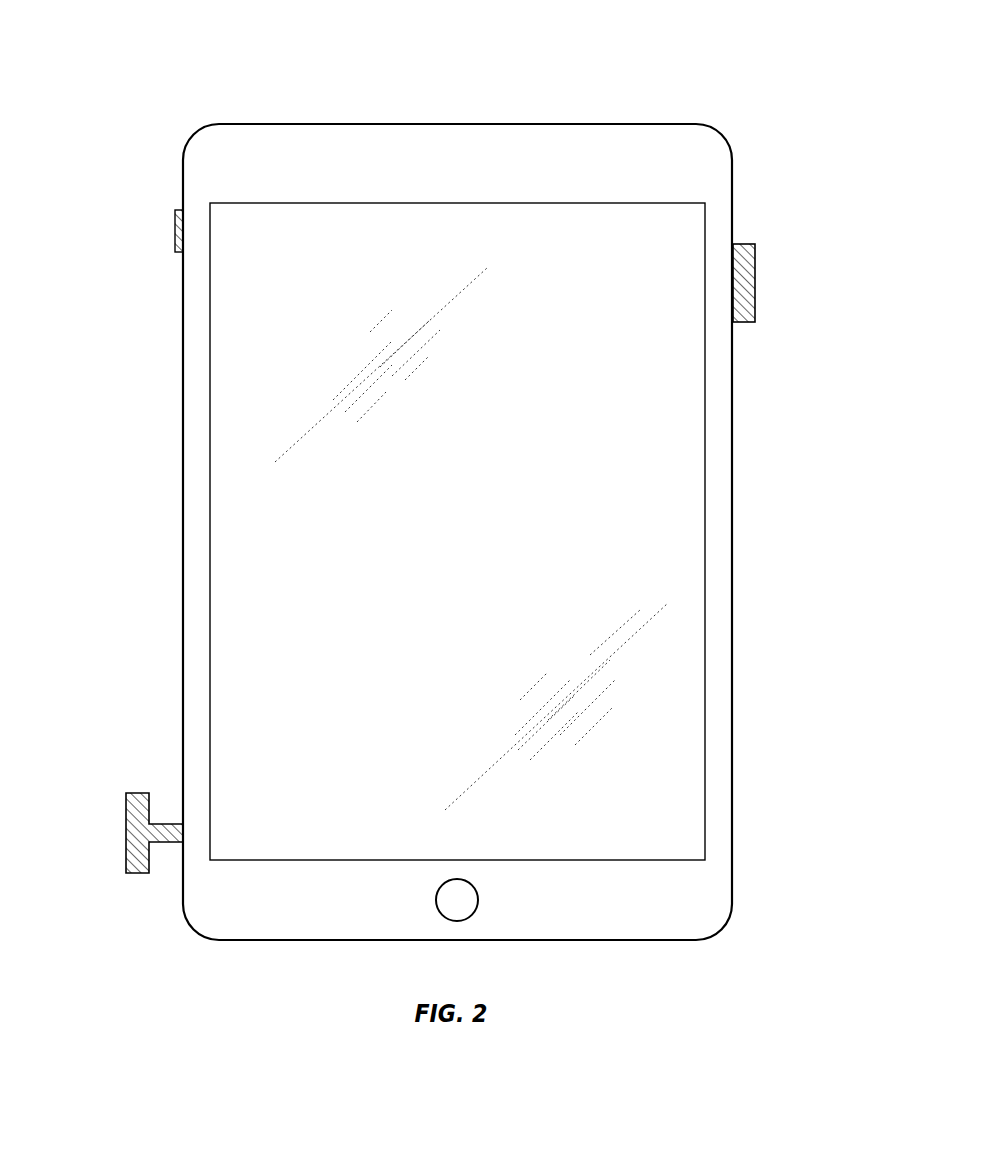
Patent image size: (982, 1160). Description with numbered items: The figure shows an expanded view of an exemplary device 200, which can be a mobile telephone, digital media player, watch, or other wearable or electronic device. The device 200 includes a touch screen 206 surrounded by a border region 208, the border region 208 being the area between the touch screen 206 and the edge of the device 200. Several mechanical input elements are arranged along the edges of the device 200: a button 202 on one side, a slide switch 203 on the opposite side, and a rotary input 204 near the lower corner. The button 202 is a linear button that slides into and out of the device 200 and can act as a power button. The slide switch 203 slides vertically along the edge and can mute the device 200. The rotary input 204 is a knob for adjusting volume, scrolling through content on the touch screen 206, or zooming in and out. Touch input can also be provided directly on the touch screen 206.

The device 200 is at (229, 96).
The button 202 is at (757, 285).
The slide switch 203 is at (175, 233).
The rotary input 204 is at (137, 793).
The touch screen 206 is at (231, 408).
The border region 208 is at (720, 797).